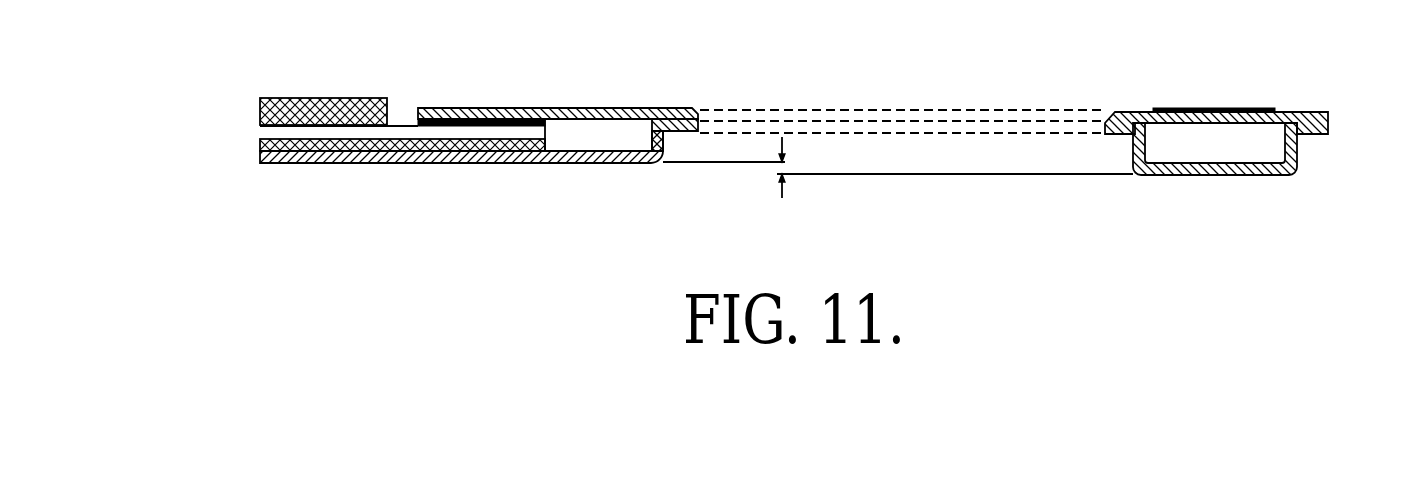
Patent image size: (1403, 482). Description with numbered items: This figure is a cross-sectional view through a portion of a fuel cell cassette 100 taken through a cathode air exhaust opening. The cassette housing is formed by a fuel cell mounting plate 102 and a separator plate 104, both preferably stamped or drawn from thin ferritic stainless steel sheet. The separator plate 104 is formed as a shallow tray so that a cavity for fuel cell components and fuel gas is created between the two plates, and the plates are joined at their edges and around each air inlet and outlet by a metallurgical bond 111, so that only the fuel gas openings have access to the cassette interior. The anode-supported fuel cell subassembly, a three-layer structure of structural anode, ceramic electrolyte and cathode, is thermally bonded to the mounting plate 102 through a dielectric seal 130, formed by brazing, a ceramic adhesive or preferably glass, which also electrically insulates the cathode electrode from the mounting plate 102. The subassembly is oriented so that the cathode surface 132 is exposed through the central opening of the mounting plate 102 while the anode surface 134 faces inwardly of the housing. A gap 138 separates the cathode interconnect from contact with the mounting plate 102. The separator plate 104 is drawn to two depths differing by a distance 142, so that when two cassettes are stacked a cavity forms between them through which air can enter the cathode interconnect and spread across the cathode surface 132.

The fuel cell cassette 100 is at (287, 73).
The fuel cell mounting plate 102 is at (580, 108).
The separator plate 104 is at (580, 160).
The metallurgical bond 111 is at (690, 108).
The dielectric seal 130 is at (463, 108).
The cathode surface 132 is at (333, 98).
The anode surface 134 is at (427, 148).
The gap 138 is at (403, 117).
The distance 142 is at (778, 168).